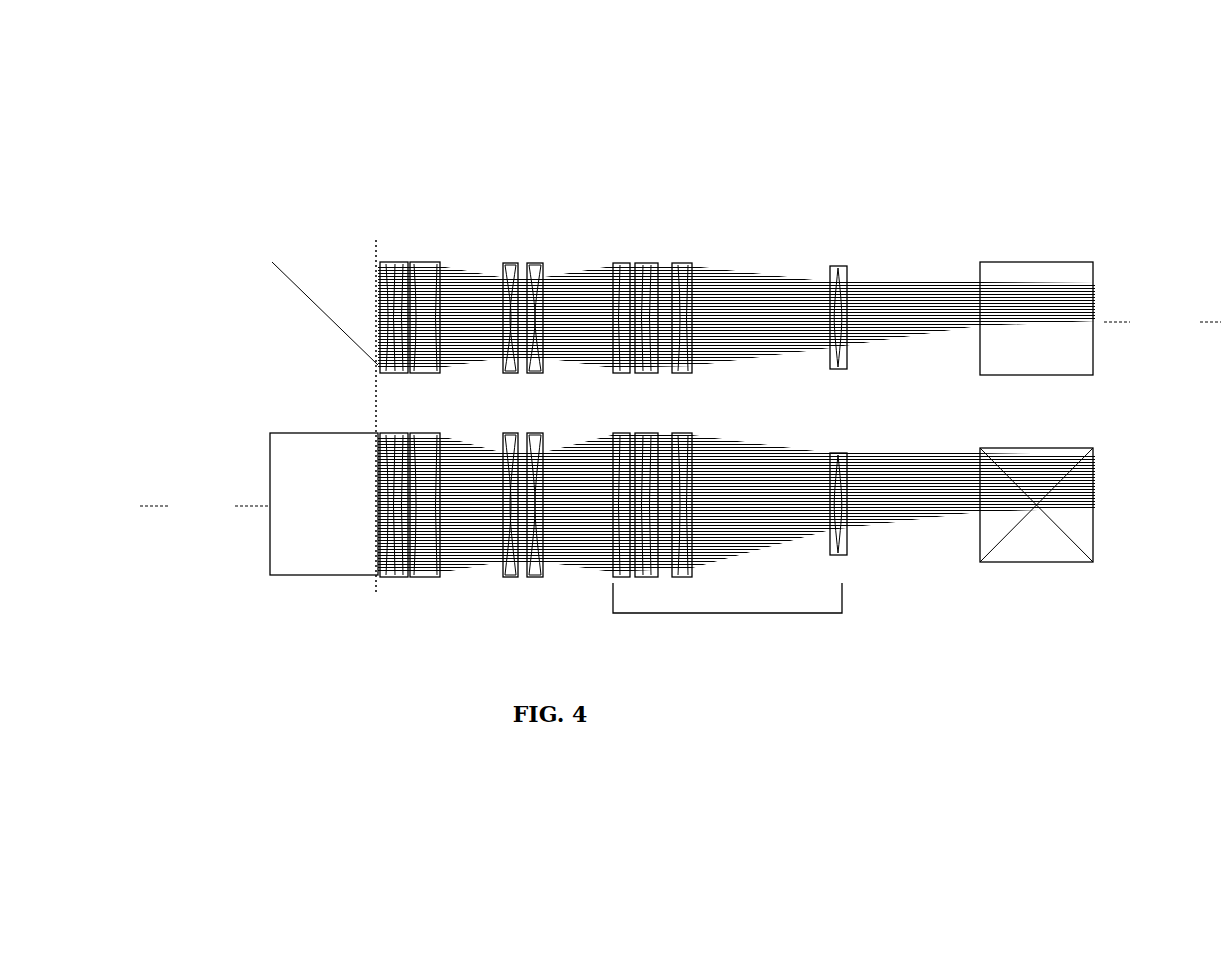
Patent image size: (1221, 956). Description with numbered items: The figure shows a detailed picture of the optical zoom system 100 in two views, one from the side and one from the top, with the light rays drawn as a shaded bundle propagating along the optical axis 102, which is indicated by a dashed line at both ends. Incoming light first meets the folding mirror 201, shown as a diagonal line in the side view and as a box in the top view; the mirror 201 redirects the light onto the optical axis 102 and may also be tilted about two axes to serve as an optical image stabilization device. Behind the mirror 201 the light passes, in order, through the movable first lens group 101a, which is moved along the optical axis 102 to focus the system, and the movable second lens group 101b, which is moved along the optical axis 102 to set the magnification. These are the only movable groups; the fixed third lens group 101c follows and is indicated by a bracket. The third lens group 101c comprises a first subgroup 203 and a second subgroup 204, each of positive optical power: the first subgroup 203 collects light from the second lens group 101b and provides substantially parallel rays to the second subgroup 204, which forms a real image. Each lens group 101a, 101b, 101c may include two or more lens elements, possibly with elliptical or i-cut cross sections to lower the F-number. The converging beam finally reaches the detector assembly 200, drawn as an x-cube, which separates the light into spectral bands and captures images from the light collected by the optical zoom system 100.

The optical zoom system 100 is at (680, 370).
The first lens group 101a is at (408, 250).
The second lens group 101b is at (522, 254).
The third lens group 101c is at (723, 428).
The optical axis 102 is at (680, 412).
The detector assembly 200 is at (1042, 249).
The mirror 201 is at (302, 298).
The first subgroup 203 is at (645, 358).
The second subgroup 204 is at (628, 258).